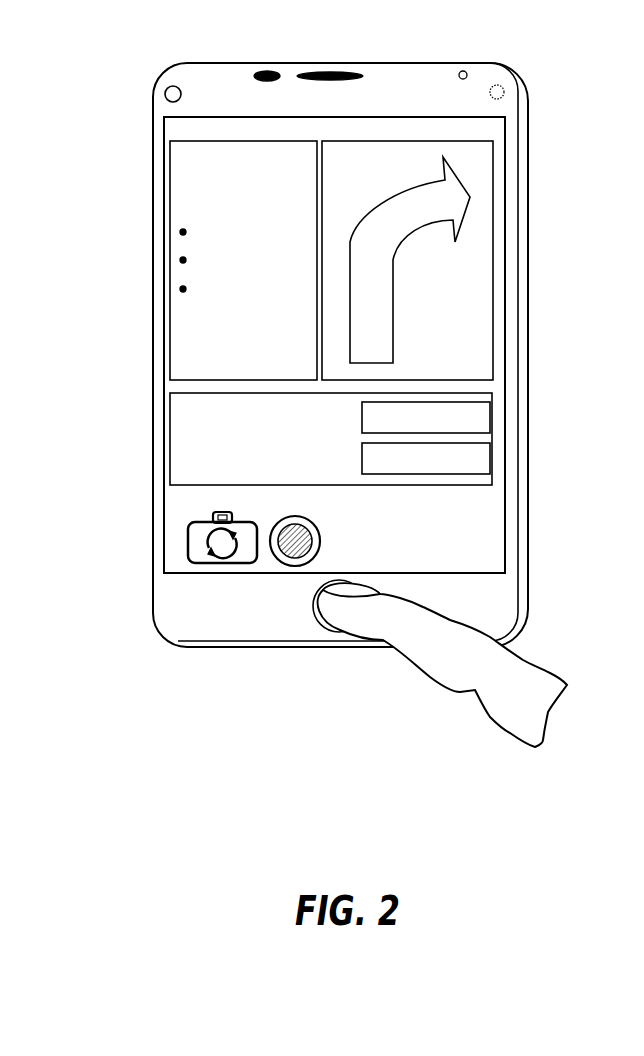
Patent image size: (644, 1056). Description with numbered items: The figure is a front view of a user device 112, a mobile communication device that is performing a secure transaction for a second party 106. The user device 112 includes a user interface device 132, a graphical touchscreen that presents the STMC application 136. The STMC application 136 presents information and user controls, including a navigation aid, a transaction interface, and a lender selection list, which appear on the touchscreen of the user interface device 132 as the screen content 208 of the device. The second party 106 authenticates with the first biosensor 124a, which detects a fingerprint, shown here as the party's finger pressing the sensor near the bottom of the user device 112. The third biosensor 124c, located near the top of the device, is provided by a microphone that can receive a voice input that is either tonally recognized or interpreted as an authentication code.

The user device 112 is at (152, 96).
The first biosensor 124a is at (168, 86).
The third biosensor 124c is at (283, 68).
The user interface device 132 is at (407, 118).
The STMC application 136 is at (465, 122).
The user interface 208 is at (185, 573).
The second party 106 is at (487, 715).